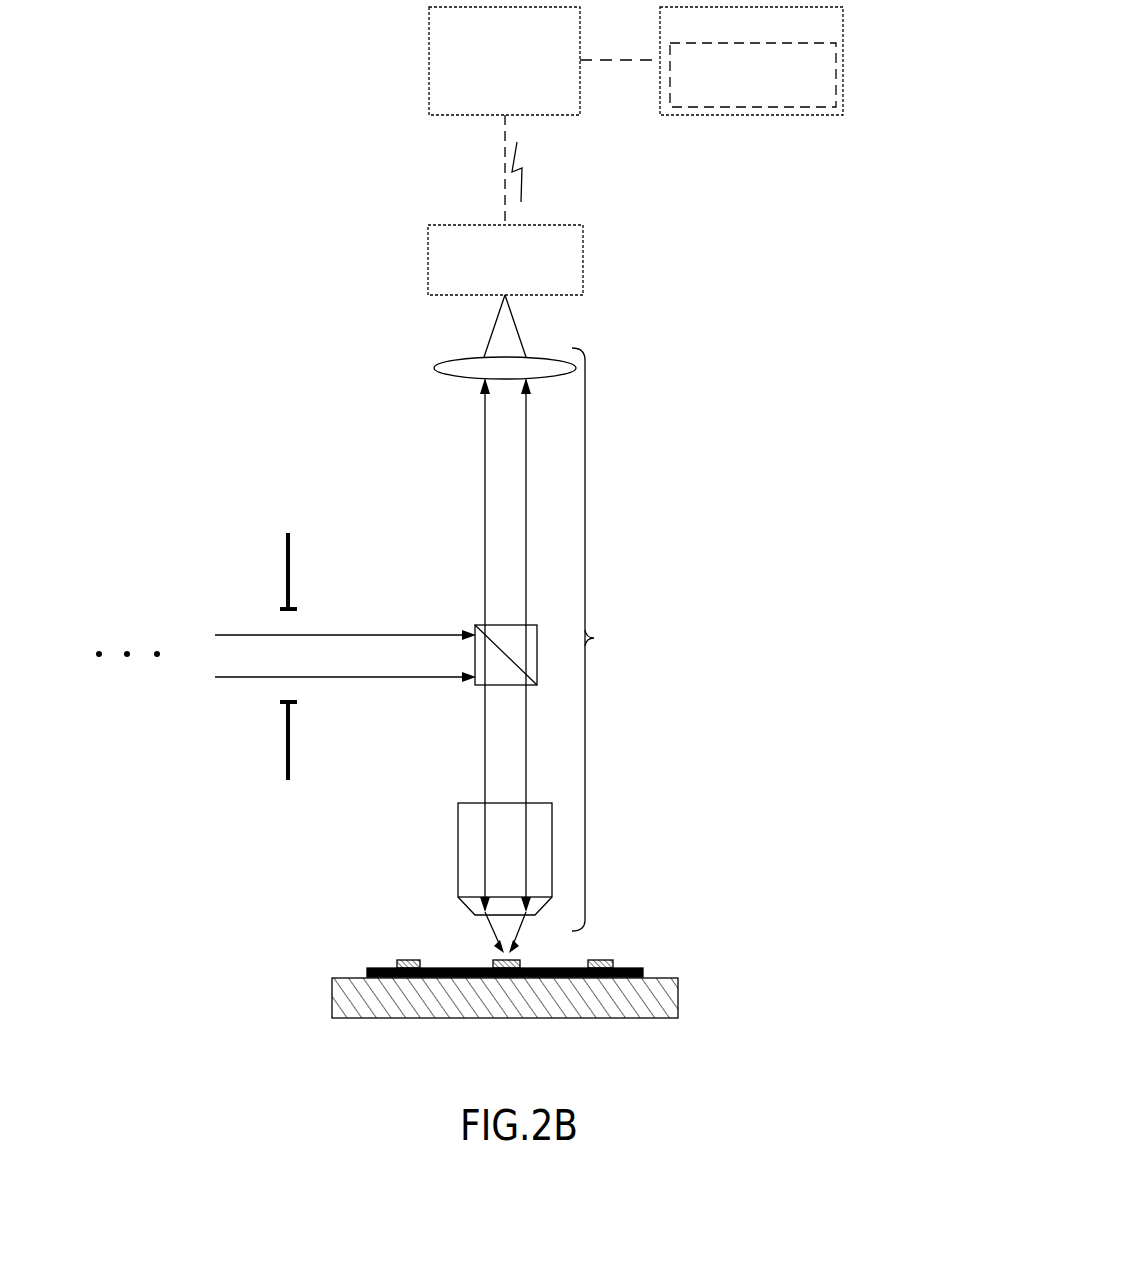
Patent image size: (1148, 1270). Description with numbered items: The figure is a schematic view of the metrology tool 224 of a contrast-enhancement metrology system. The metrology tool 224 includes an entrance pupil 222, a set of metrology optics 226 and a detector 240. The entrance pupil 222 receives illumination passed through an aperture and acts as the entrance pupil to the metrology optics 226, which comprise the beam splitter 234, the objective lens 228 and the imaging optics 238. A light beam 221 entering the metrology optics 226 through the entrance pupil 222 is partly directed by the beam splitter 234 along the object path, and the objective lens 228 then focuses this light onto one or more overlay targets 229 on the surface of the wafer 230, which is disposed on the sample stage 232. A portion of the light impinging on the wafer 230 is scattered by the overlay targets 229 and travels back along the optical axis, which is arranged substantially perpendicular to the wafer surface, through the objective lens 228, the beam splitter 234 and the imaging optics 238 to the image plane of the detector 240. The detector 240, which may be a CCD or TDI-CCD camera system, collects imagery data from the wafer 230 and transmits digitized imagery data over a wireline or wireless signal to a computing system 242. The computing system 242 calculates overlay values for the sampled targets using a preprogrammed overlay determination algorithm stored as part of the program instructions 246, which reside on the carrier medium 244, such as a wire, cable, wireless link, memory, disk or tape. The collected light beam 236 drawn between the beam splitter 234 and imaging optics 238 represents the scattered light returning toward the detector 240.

The light beam 221 is at (245, 655).
The entrance pupil 222 is at (292, 570).
The metrology tool 224 is at (286, 262).
The metrology optics 226 is at (601, 639).
The objective lens 228 is at (458, 822).
The overlay targets 229 is at (520, 962).
The wafer 230 is at (645, 972).
The sample stage 232 is at (680, 1002).
The beam splitter 234 is at (478, 688).
The collected light beam 236 is at (506, 504).
The imaging optics 238 is at (447, 362).
The detector 240 is at (428, 258).
The computing system 242 is at (429, 60).
The carrier medium 244 is at (843, 26).
The program instructions 246 is at (836, 73).